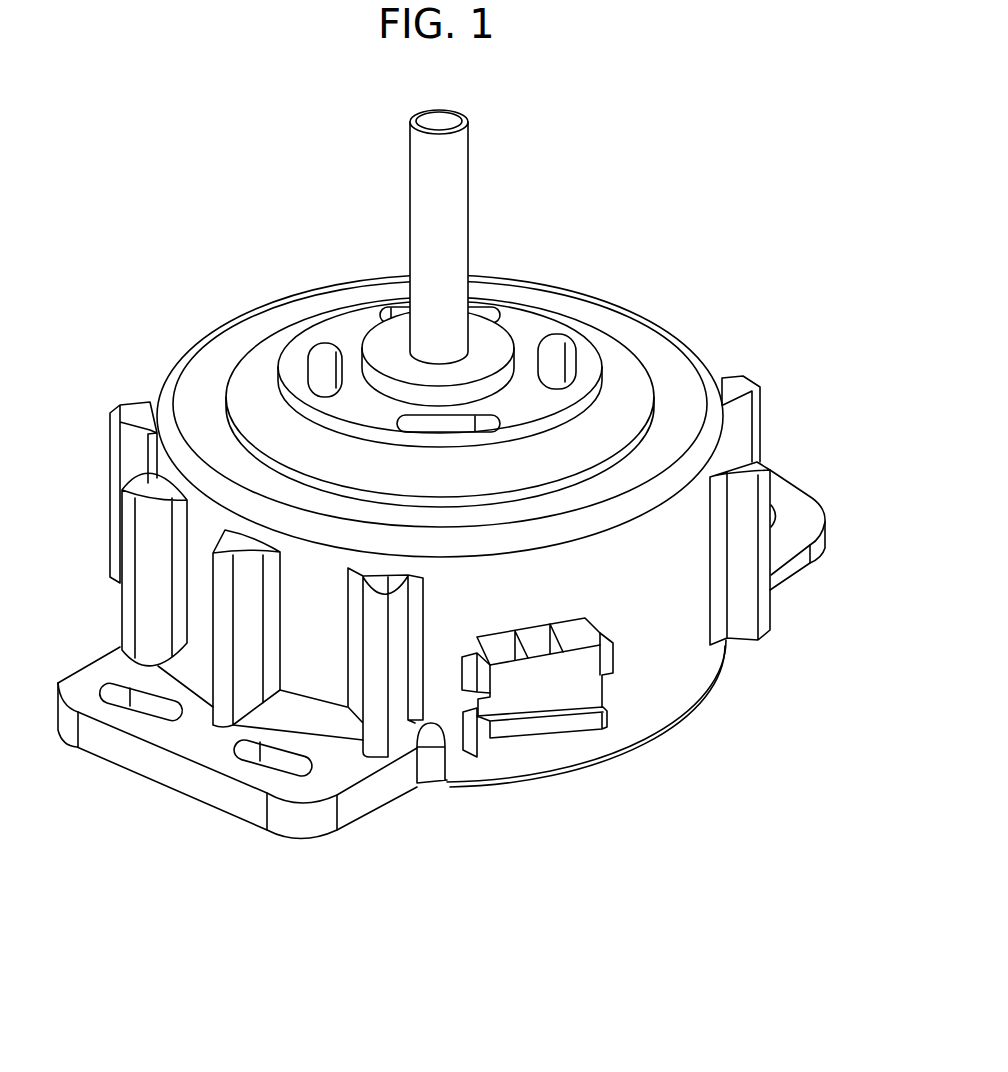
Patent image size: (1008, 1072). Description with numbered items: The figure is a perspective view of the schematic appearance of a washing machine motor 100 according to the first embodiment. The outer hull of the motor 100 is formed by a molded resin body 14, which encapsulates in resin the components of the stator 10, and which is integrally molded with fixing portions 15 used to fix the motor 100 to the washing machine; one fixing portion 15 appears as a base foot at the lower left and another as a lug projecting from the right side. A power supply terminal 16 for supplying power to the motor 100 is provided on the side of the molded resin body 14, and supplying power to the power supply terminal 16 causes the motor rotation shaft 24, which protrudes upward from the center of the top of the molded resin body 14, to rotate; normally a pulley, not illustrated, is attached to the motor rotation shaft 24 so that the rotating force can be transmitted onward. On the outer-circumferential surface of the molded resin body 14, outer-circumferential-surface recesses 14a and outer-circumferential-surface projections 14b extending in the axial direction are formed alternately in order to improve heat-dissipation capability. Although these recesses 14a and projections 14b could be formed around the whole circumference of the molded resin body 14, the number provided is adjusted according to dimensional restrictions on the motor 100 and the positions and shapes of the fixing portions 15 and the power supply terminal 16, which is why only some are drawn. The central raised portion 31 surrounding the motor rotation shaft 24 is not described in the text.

The motor 100 is at (600, 282).
The stator 10 is at (707, 698).
The molded resin body 14 is at (653, 637).
The outer-circumferential-surface recesses 14a is at (313, 667).
The outer-circumferential-surface projections 14b is at (380, 688).
The fixing portions 15 is at (202, 730).
The power supply terminal 16 is at (548, 686).
The motor rotation shaft 24 is at (437, 178).
The bearing holder 31 is at (495, 355).